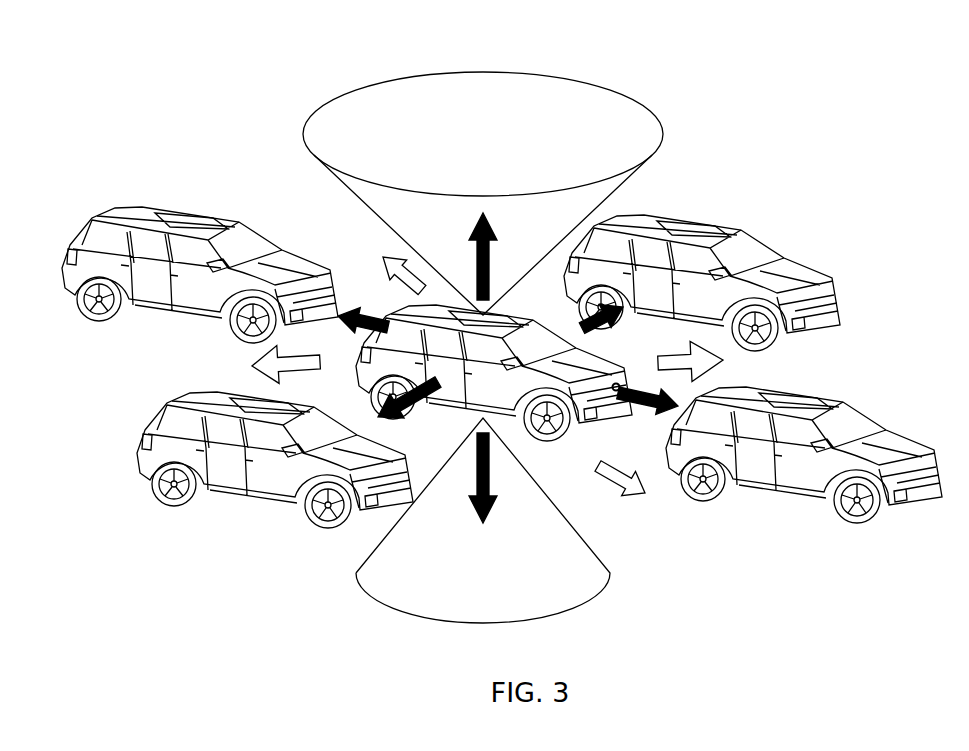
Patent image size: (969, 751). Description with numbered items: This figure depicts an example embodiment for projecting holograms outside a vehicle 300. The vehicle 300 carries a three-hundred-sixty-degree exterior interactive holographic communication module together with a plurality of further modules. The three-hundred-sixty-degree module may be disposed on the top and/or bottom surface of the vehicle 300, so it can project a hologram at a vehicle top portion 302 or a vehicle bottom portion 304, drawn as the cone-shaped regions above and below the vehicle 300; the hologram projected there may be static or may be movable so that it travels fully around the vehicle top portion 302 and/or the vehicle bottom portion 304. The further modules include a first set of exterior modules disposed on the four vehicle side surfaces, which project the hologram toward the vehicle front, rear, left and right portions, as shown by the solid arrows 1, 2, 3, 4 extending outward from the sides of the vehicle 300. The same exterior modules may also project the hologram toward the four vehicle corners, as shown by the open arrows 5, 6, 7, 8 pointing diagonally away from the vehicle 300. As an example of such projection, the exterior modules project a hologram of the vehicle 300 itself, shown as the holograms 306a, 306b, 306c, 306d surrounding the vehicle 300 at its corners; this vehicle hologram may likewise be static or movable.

The vehicle 300 is at (578, 432).
The vehicle top portion 302 is at (490, 97).
The vehicle bottom portion 304 is at (363, 573).
The hologram 306a is at (190, 212).
The hologram 306b is at (723, 225).
The hologram 306c is at (875, 418).
The hologram 306d is at (148, 430).
The arrow 1 is at (368, 316).
The arrow 2 is at (618, 327).
The arrow 3 is at (648, 407).
The arrow 4 is at (427, 402).
The arrow 5 is at (388, 256).
The arrow 6 is at (730, 373).
The arrow 7 is at (638, 500).
The arrow 8 is at (252, 362).